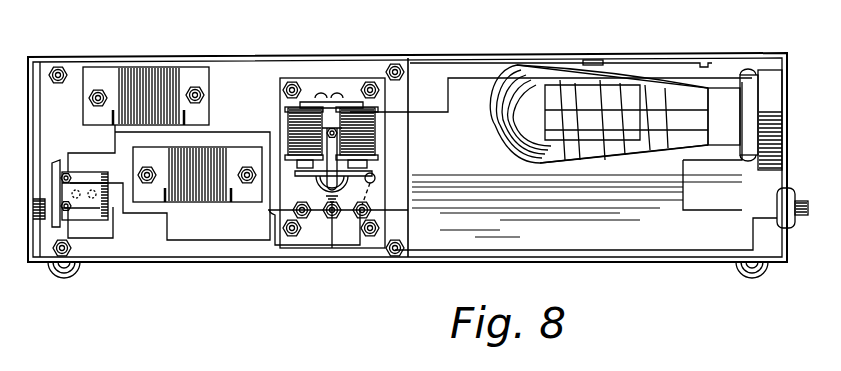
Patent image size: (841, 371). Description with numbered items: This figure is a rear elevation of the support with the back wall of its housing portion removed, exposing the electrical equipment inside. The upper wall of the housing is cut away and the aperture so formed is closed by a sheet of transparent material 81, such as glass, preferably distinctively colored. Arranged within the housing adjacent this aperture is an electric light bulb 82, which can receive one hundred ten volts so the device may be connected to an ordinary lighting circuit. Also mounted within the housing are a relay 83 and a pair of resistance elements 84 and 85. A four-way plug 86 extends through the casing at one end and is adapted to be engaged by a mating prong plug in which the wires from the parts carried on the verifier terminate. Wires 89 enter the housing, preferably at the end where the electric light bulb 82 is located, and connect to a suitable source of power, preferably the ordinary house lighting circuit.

The sheet of transparent material 81 is at (678, 57).
The electric light bulb 82 is at (603, 82).
The relay 83 is at (402, 152).
The resistance element 84 is at (248, 193).
The resistance element 85 is at (204, 115).
The four-way plug 86 is at (58, 163).
The wires 89 is at (795, 228).